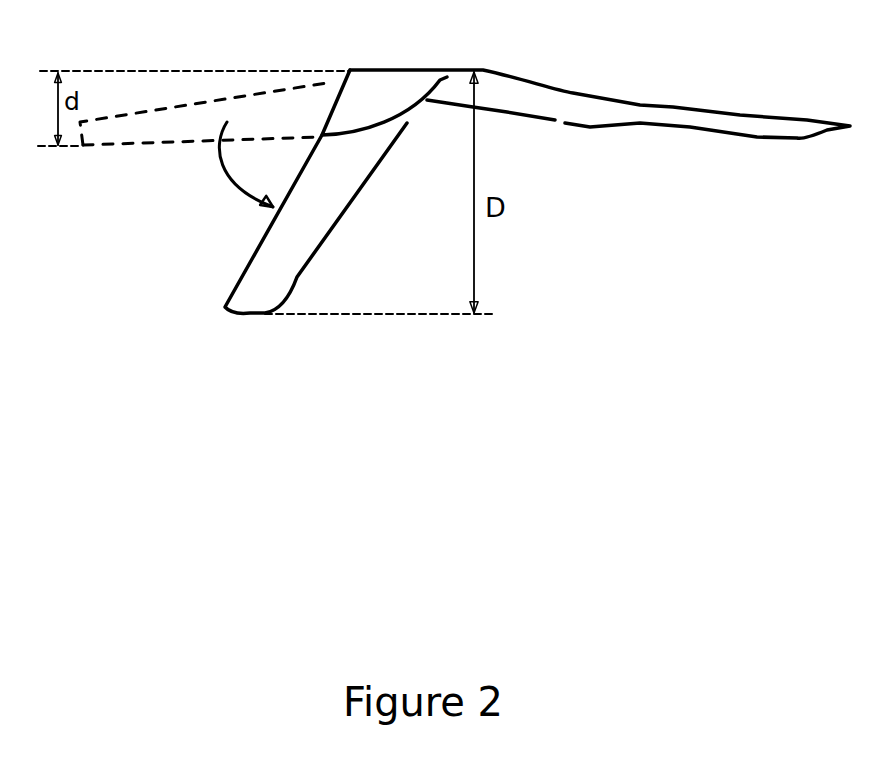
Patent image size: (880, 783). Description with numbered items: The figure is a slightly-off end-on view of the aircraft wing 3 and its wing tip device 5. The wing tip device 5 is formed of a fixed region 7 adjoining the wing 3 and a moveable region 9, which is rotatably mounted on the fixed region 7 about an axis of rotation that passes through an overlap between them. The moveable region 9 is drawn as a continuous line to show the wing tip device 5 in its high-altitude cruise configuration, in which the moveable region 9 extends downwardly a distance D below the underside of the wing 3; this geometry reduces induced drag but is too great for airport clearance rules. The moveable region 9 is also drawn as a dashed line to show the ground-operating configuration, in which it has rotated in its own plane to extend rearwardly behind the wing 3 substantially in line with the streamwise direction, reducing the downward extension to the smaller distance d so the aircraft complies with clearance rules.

The aircraft wing 3 is at (637, 107).
The wing tip device 5 is at (365, 235).
The fixed region 7 is at (368, 98).
The moveable region 9 is at (143, 132).